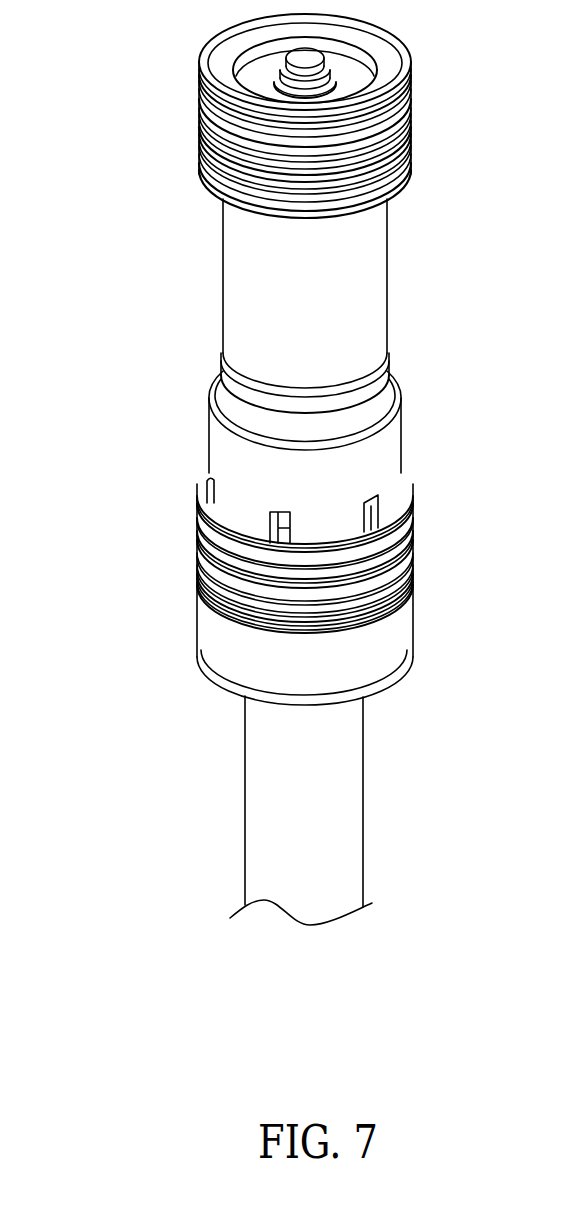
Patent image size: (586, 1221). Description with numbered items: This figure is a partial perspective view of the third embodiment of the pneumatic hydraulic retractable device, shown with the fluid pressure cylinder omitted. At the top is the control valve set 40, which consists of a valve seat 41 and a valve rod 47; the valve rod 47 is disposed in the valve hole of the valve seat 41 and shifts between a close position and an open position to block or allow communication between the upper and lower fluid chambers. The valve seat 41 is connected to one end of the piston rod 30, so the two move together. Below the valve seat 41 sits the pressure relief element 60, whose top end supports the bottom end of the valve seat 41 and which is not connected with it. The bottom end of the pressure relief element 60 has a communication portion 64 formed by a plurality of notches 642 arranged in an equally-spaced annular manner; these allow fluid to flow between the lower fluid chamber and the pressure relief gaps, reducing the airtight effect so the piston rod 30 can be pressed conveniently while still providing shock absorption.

The piston rod 30 is at (325, 738).
The control valve set 40 is at (70, 63).
The valve seat 41 is at (275, 270).
The valve rod 47 is at (300, 55).
The pressure relief element 60 is at (354, 467).
The communication portion 64 is at (262, 522).
The notches 642 is at (376, 503).